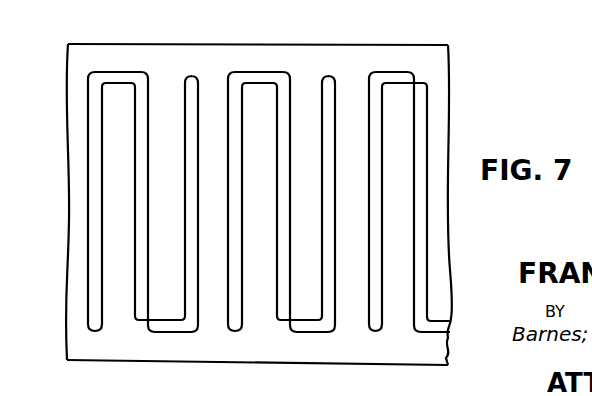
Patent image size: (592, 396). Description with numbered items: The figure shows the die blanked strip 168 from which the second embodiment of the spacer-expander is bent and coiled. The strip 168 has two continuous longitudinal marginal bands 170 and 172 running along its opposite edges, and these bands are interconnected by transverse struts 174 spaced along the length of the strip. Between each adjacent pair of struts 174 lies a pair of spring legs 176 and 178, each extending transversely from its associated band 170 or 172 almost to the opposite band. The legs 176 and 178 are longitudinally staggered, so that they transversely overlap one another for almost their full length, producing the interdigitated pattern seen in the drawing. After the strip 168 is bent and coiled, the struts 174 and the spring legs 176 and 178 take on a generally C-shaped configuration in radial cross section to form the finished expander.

The die blanked strip 168 is at (87, 44).
The longitudinal marginal band 170 is at (188, 58).
The longitudinal marginal band 172 is at (113, 350).
The strut 174 is at (220, 92).
The spring leg 176 is at (122, 260).
The spring leg 178 is at (167, 222).